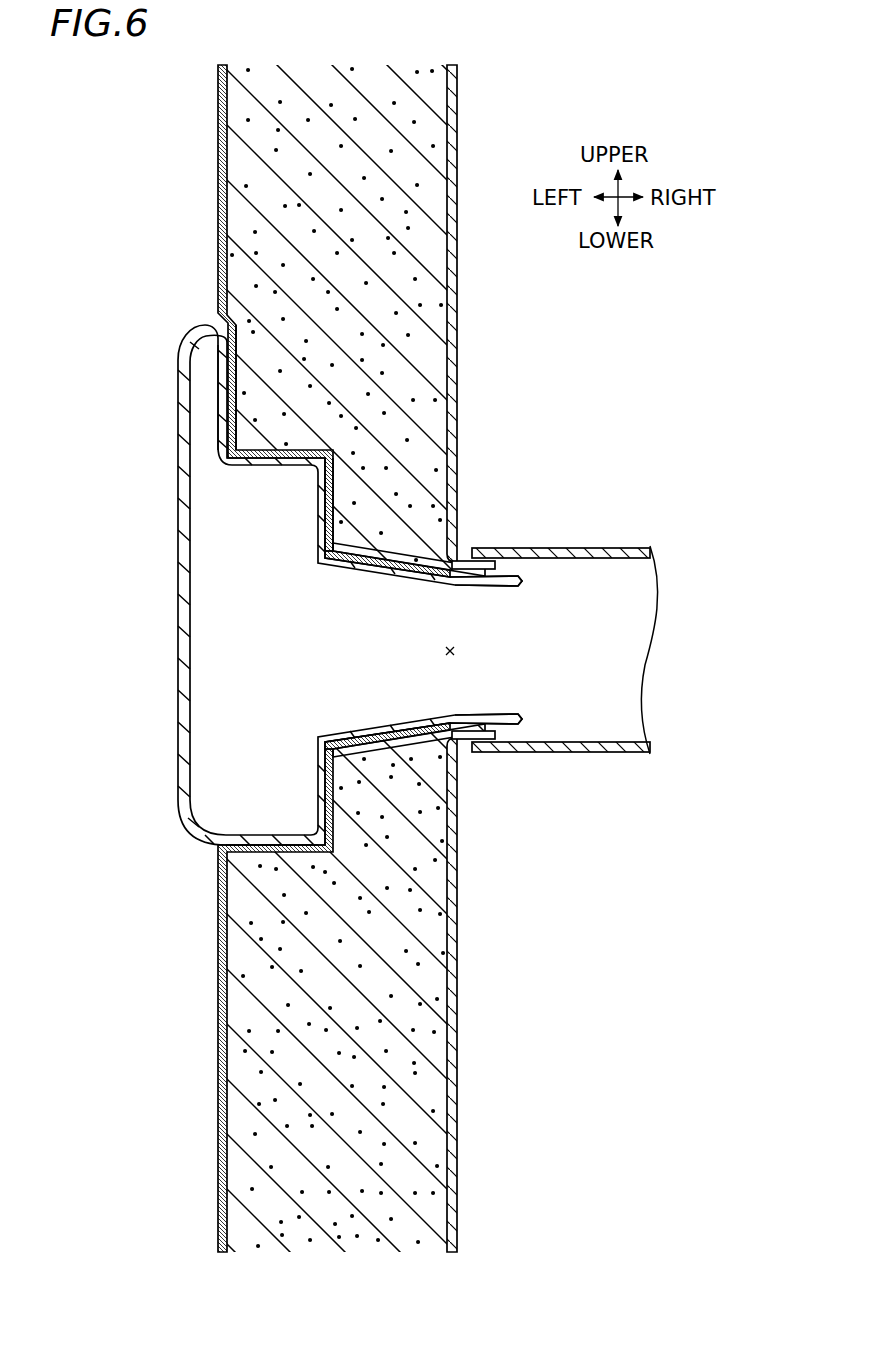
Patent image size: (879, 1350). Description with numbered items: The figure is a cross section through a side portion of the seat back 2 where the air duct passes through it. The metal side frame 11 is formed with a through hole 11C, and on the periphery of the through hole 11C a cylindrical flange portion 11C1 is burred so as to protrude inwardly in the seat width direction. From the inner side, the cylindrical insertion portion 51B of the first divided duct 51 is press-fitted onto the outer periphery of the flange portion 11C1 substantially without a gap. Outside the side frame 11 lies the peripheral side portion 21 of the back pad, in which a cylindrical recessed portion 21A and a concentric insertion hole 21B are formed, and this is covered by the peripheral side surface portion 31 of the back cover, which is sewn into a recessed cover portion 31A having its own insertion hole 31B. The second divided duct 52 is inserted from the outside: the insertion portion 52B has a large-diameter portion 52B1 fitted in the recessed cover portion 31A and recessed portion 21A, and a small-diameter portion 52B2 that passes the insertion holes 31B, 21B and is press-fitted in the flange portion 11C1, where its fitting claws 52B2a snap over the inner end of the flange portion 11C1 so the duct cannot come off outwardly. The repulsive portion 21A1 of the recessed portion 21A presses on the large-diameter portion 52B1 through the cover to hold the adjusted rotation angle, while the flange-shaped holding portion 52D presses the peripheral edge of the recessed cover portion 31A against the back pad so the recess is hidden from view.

The seat back 2 is at (165, 223).
The side frame 11 is at (459, 118).
The through hole 11C is at (455, 651).
The flange portion 11C1 is at (478, 556).
The peripheral side portion 21 is at (263, 117).
The recessed portion 21A is at (330, 482).
The repulsive portion 21A1 is at (267, 417).
The insertion hole 21B is at (390, 557).
The peripheral side surface portion 31 is at (217, 137).
The recessed cover portion 31A is at (326, 513).
The insertion hole 31B is at (324, 557).
The first divided duct 51 is at (594, 546).
The insertion portion 51B is at (483, 748).
The second divided duct 52 is at (177, 683).
The insertion portion 52B is at (372, 680).
The large-diameter portion 52B1 is at (253, 835).
The small-diameter portion 52B2 is at (357, 740).
The fitting claw 52B2a is at (503, 578).
The holding portion 52D is at (224, 401).